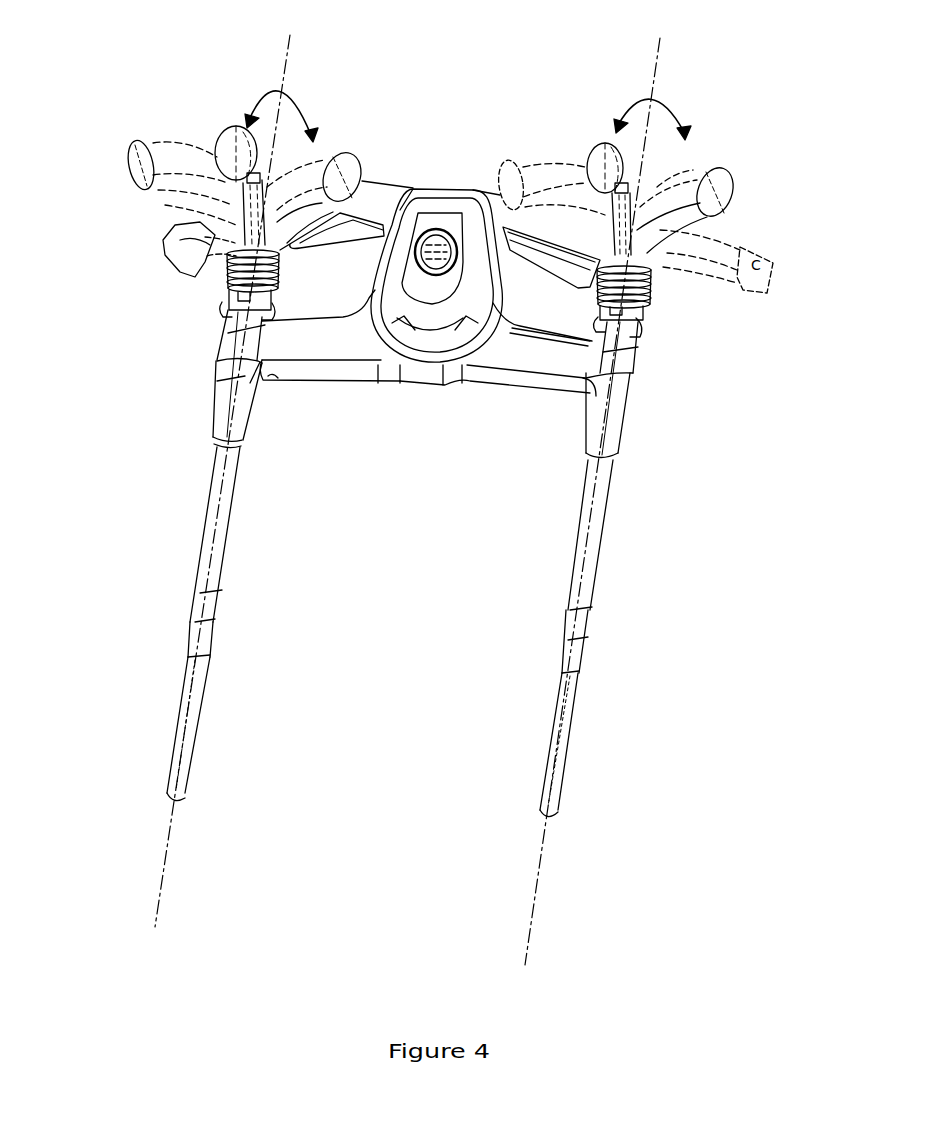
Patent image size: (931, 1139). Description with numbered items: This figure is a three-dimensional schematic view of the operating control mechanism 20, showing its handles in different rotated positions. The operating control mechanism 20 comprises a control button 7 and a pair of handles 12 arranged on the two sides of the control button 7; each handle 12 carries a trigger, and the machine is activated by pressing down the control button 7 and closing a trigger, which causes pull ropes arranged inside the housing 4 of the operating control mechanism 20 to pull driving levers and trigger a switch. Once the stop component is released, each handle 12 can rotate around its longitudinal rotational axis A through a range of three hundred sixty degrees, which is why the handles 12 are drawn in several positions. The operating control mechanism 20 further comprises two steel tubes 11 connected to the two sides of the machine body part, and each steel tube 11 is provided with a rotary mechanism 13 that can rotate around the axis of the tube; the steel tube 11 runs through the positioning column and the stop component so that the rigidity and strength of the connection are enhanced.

The housing 4 is at (265, 345).
The control button 7 is at (455, 195).
The steel tube 11 is at (203, 550).
The handle 12 is at (388, 192).
The rotary mechanism 13 is at (223, 404).
The operating control mechanism 20 is at (640, 423).
The longitudinal rotational axis A is at (282, 82).